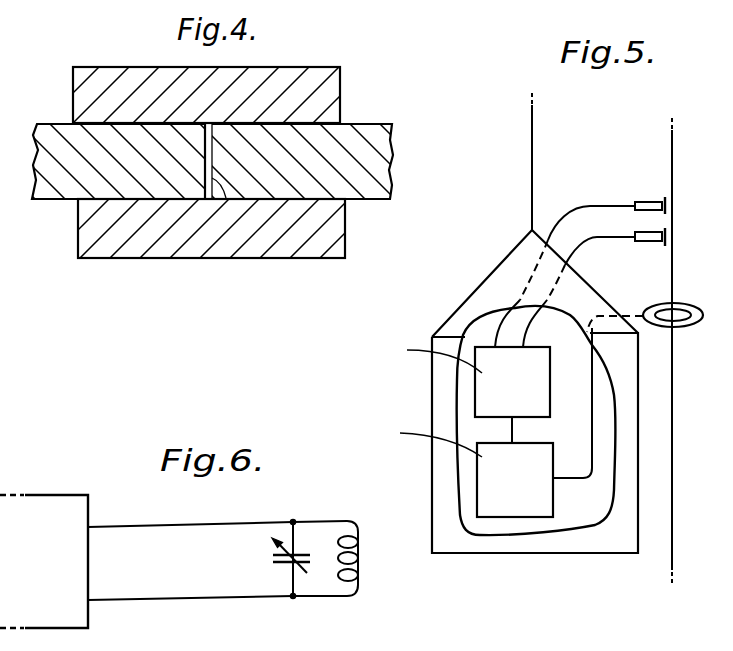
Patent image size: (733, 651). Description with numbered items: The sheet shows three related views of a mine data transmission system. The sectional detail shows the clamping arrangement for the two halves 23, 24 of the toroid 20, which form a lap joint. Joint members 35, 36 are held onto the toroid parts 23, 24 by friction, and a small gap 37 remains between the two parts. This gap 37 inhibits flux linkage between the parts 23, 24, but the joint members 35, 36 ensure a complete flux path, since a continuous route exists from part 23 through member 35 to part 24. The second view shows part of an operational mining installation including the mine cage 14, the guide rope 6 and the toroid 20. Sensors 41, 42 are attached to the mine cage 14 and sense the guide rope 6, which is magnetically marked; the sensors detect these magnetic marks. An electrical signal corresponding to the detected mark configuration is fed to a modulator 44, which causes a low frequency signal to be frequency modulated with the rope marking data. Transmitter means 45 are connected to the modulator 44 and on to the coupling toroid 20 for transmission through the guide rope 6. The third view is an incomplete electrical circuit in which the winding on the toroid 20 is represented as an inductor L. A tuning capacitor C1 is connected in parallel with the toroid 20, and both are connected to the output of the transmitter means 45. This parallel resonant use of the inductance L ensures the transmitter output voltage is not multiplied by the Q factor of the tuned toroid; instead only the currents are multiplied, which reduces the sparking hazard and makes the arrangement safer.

In FIG. 4, the toroid half 23 is at (63, 143).
In FIG. 4, the toroid half 24 is at (357, 137).
In FIG. 4, the joint member 35 is at (287, 90).
In FIG. 4, the joint member 36 is at (115, 240).
In FIG. 4, the gap 37 is at (225, 193).
In FIG. 5, the guide rope 6 is at (673, 182).
In FIG. 5, the mine cage 14 is at (587, 517).
In FIG. 5, the toroid 20 is at (687, 324).
In FIG. 5, the sensor 41 is at (646, 200).
In FIG. 5, the sensor 42 is at (655, 246).
In FIG. 5, the modulator 44 is at (517, 396).
In FIG. 5, the transmitter means 45 is at (522, 486).
In FIG. 6, the transmitter means 45 is at (66, 578).
In FIG. 6, the tuning capacitor C1 is at (270, 566).
In FIG. 6, the inductor L is at (358, 573).